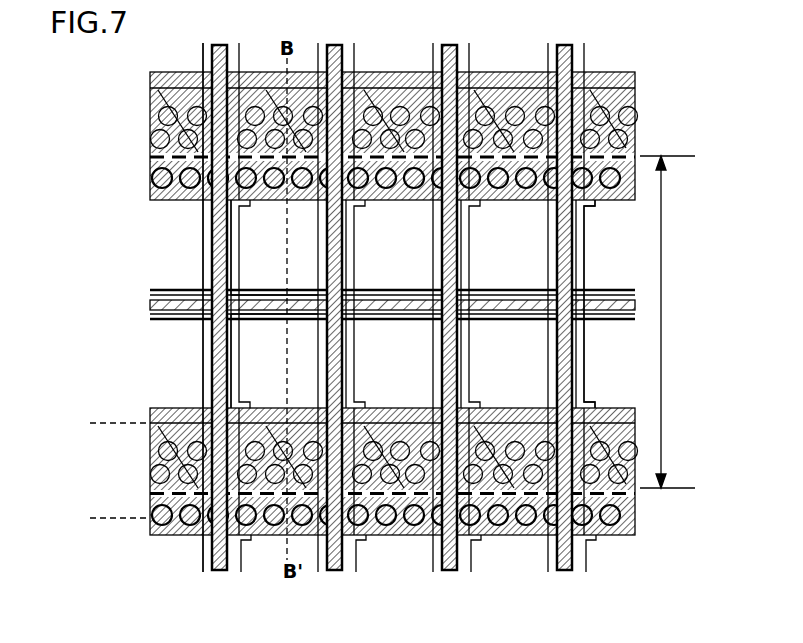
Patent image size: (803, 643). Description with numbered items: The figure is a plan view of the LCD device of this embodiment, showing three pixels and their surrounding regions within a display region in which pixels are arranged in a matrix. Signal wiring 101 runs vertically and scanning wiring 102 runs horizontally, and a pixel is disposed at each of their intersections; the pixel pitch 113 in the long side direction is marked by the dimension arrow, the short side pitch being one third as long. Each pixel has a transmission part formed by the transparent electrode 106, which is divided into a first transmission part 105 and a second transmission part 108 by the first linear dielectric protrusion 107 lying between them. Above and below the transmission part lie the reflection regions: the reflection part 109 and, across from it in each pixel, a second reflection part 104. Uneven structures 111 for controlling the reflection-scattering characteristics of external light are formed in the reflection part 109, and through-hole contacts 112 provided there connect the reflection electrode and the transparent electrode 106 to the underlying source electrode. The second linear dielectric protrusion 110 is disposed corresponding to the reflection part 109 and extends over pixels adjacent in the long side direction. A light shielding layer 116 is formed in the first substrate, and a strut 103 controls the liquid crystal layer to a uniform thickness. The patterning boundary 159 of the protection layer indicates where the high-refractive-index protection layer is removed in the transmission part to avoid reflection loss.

The signal wiring 101 is at (328, 567).
The scanning wiring 102 is at (403, 537).
The strut 103 is at (536, 536).
The second reflection part 104 is at (149, 165).
The first transmission part 105 is at (256, 250).
The transparent electrode 106 is at (210, 247).
The first linear dielectric protrusion 107 is at (144, 309).
The second transmission part 108 is at (256, 370).
The reflection part 109 is at (148, 408).
The second linear dielectric protrusion 110 is at (90, 423).
The uneven structures 111 is at (405, 72).
The through-hole contacts 112 is at (527, 72).
The pixel pitch 113 is at (661, 357).
The light shielding layer 116 is at (196, 289).
The patterning boundary of the protection layer 159 is at (585, 262).